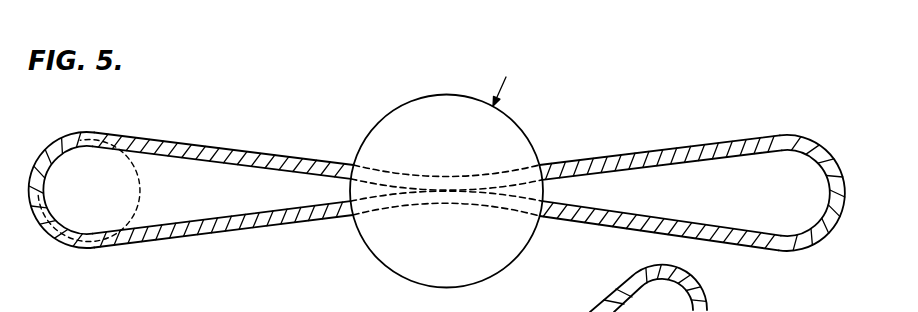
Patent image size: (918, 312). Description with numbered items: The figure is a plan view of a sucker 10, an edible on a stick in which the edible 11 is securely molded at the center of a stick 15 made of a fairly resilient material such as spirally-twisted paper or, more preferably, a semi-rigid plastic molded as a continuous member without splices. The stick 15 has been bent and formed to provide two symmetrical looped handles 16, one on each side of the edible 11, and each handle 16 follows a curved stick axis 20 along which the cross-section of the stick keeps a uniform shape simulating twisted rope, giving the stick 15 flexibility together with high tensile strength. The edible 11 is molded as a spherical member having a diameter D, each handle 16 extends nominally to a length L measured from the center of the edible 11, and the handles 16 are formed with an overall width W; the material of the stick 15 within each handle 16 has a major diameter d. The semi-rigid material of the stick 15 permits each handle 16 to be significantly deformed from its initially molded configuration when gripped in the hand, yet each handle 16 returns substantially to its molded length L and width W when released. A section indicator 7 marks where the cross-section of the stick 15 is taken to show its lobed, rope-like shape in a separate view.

The sucker 10 is at (520, 125).
The edible 11 is at (375, 124).
The stick 15 is at (200, 146).
The looped handles 16 is at (133, 231).
The stick axis 20 is at (74, 130).
The section line of FIG. 7 is at (587, 282).
The diameter of the edible D is at (399, 276).
The length of handle L is at (444, 15).
The overall width of handle W is at (807, 134).
The major diameter of handles d is at (702, 160).